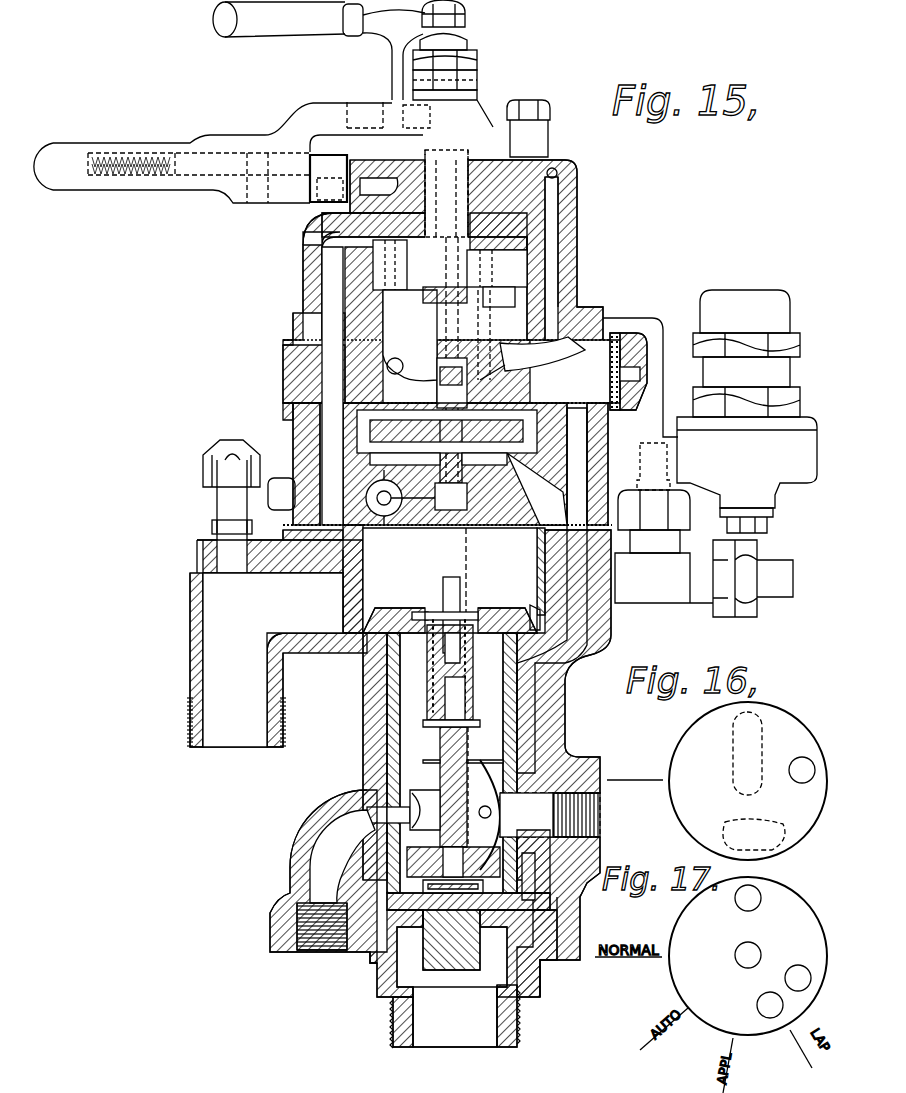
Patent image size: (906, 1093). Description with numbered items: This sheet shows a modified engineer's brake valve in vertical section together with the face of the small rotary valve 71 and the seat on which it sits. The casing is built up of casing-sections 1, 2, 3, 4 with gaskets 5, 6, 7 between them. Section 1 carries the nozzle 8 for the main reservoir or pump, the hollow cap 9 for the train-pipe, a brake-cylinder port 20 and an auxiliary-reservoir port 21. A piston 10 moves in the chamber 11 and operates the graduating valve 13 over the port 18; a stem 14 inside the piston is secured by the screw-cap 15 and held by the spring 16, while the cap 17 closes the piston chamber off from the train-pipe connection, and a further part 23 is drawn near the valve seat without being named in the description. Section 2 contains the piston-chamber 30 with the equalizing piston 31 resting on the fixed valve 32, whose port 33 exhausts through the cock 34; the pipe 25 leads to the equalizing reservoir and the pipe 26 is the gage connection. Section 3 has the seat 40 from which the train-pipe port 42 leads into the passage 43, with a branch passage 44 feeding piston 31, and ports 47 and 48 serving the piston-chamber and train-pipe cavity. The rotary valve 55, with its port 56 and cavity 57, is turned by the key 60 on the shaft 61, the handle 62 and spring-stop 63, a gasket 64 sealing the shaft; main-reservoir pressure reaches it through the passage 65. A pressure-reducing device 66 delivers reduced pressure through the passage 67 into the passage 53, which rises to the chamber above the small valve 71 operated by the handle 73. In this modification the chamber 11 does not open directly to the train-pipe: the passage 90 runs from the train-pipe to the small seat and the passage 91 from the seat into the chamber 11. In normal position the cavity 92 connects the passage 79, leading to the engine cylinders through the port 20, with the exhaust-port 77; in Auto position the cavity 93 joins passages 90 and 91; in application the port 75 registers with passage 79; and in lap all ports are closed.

In FIG. 15, the casing-section 1 is at (197, 598).
In FIG. 15, the casing-section 2 is at (297, 452).
In FIG. 15, the casing-section 3 is at (285, 392).
In FIG. 15, the casing-section 4 is at (303, 282).
In FIG. 15, the gasket 5 is at (293, 529).
In FIG. 15, the gasket 6 is at (293, 421).
In FIG. 15, the gasket 7 is at (293, 345).
In FIG. 15, the nozzle 8 is at (273, 660).
In FIG. 15, the hollow cap or plug 9 is at (463, 972).
In FIG. 15, the piston 10 is at (450, 604).
In FIG. 15, the chamber 11 is at (440, 579).
In FIG. 15, the graduating valve 13 is at (375, 772).
In FIG. 15, the stem 14 is at (443, 590).
In FIG. 15, the screw-cap 15 is at (475, 611).
In FIG. 15, the spring 16 is at (413, 615).
In FIG. 15, the cap 17 is at (433, 946).
In FIG. 15, the port 18 is at (370, 793).
In FIG. 15, the port 20 is at (335, 946).
In FIG. 15, the port 21 is at (600, 812).
In FIG. 15, the passage 23 is at (530, 605).
In FIG. 15, the pipe or passage 25 is at (704, 553).
In FIG. 15, the pipe 26 is at (228, 499).
In FIG. 15, the piston-chamber 30 is at (447, 429).
In FIG. 15, the piston 31 is at (486, 457).
In FIG. 15, the valve 32 is at (405, 457).
In FIG. 15, the port 33 is at (451, 496).
In FIG. 15, the cock 34 is at (382, 538).
In FIG. 15, the seat 40 is at (447, 312).
In FIG. 15, the train-pipe port 42 is at (436, 298).
In FIG. 15, the passage 43 is at (543, 555).
In FIG. 15, the branch passage 44 is at (555, 497).
In FIG. 15, the port 47 is at (487, 362).
In FIG. 15, the port 48 is at (499, 297).
In FIG. 15, the passage 53 is at (578, 205).
In FIG. 15, the rotary valve 55 is at (498, 231).
In FIG. 15, the port 56 is at (376, 321).
In FIG. 15, the cavity 57 is at (497, 268).
In FIG. 15, the key 60 is at (425, 227).
In FIG. 15, the shaft 61 is at (487, 150).
In FIG. 15, the handle 62 is at (228, 152).
In FIG. 15, the spring-stop 63 is at (328, 178).
In FIG. 15, the gasket 64 is at (552, 165).
In FIG. 15, the passage 65 is at (332, 386).
In FIG. 15, the pressure-reducing device 66 is at (747, 411).
In FIG. 15, the passage 67 is at (644, 372).
In FIG. 16, the small valve 71 is at (717, 781).
In FIG. 15, the handle 73 is at (319, 51).
In FIG. 16, the port 75 is at (802, 770).
In FIG. 17, the exhaust-port 77 is at (748, 955).
In FIG. 15, the passage 79 is at (468, 567).
In FIG. 17, the passage 79 is at (748, 898).
In FIG. 15, the passage 90 is at (403, 362).
In FIG. 17, the passage 90 is at (770, 1005).
In FIG. 15, the passage 91 is at (490, 370).
In FIG. 17, the passage 91 is at (798, 978).
In FIG. 16, the cavity 92 is at (748, 735).
In FIG. 16, the cavity 93 is at (770, 840).